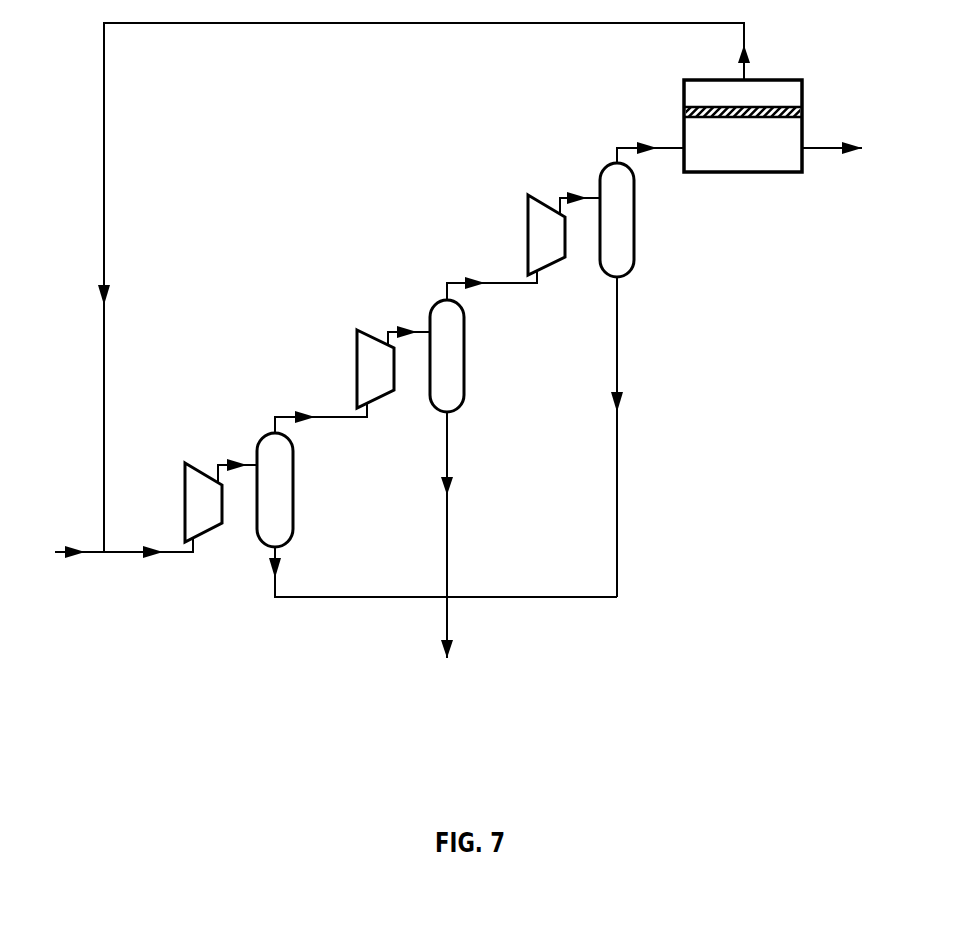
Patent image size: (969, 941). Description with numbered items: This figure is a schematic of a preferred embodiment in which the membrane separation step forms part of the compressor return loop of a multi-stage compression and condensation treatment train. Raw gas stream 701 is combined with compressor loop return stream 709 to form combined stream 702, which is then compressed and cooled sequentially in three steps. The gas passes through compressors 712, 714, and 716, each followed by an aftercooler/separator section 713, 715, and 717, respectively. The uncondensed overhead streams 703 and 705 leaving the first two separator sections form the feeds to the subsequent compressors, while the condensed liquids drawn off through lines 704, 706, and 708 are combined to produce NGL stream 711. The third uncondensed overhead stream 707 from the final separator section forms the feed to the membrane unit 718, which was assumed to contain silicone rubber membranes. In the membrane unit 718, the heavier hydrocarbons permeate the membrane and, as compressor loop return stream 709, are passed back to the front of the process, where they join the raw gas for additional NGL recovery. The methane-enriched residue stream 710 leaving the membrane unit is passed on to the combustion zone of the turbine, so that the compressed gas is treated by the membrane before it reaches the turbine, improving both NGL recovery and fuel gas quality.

The raw gas stream 701 is at (58, 554).
The combined stream 702 is at (148, 563).
The uncondensed overhead stream 703 is at (321, 408).
The condensed liquids line 704 is at (443, 572).
The uncondensed overhead stream 705 is at (492, 273).
The condensed liquids line 706 is at (467, 504).
The third uncondensed overhead stream 707 is at (650, 139).
The condensed liquids line 708 is at (638, 437).
The compressor loop return stream 709 is at (424, 276).
The methane-enriched residue stream 710 is at (853, 149).
The NGL stream 711 is at (445, 644).
The compressor 712 is at (185, 484).
The aftercooler/separator section 713 is at (293, 485).
The compressor 714 is at (357, 350).
The aftercooler/separator section 715 is at (464, 355).
The compressor 716 is at (528, 217).
The aftercooler/separator section 717 is at (634, 236).
The membrane unit 718 is at (752, 173).